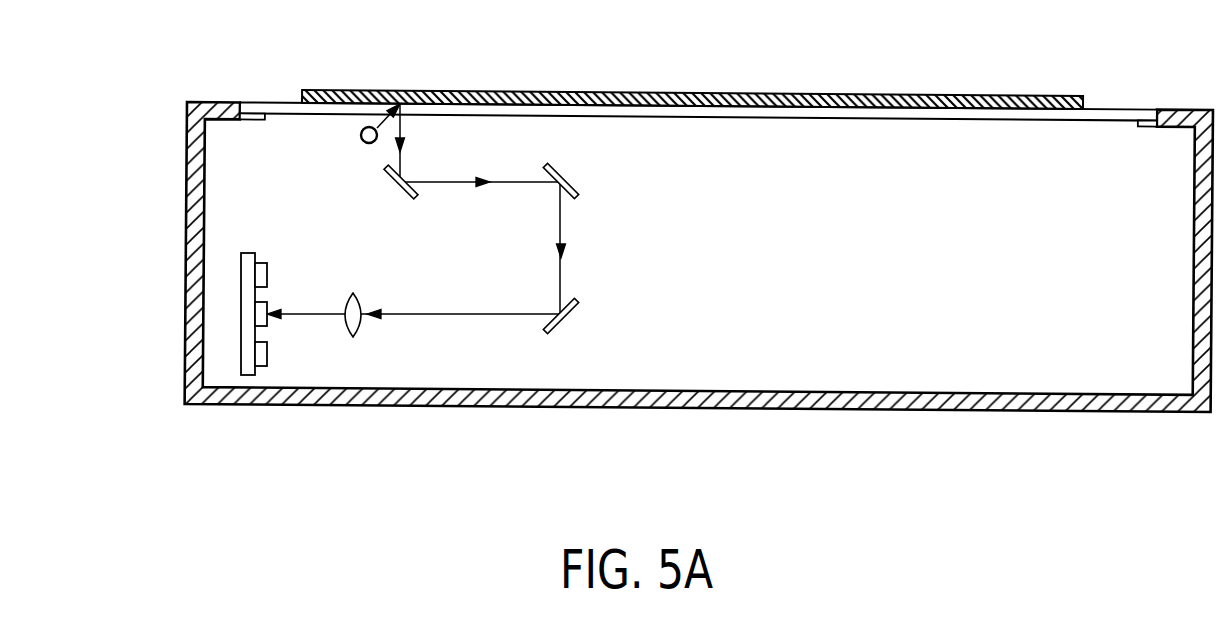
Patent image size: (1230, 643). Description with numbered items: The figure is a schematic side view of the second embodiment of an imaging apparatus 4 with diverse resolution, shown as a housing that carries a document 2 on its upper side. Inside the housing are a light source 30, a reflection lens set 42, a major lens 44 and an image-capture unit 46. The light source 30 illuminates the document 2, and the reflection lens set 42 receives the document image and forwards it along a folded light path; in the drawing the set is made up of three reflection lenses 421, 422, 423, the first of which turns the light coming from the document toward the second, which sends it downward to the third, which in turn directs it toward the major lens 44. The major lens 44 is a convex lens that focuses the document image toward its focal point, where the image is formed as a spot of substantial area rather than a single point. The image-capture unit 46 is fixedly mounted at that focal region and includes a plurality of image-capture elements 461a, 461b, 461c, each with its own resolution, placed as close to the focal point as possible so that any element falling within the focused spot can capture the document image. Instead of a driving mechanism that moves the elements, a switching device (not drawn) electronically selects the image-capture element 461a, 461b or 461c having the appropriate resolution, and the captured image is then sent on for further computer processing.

The document 2 is at (720, 92).
The imaging apparatus 4 is at (138, 312).
The light source 30 is at (368, 127).
The reflection lens set 42 is at (504, 222).
The first reflecting mirror 421 is at (390, 175).
The second reflecting mirror 422 is at (577, 182).
The third reflecting mirror 423 is at (577, 314).
The major lens 44 is at (358, 298).
The image-capture unit 46 is at (297, 286).
The image-capture element 461a is at (265, 262).
The image-capture element 461b is at (267, 305).
The image-capture element 461c is at (265, 357).